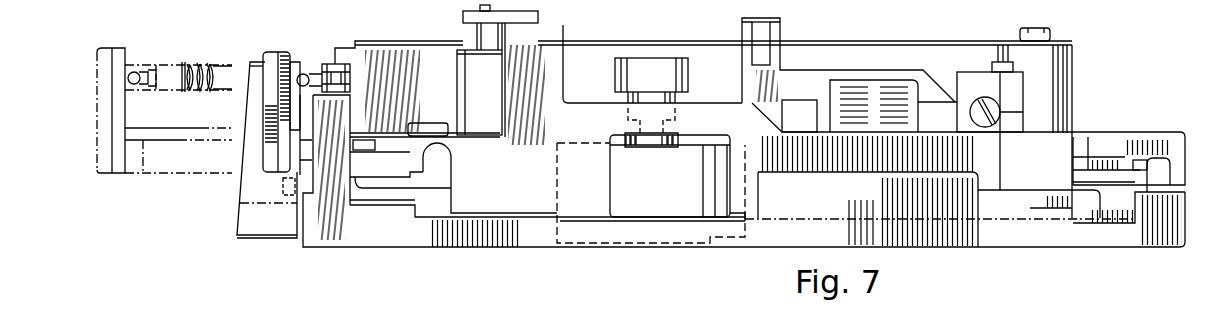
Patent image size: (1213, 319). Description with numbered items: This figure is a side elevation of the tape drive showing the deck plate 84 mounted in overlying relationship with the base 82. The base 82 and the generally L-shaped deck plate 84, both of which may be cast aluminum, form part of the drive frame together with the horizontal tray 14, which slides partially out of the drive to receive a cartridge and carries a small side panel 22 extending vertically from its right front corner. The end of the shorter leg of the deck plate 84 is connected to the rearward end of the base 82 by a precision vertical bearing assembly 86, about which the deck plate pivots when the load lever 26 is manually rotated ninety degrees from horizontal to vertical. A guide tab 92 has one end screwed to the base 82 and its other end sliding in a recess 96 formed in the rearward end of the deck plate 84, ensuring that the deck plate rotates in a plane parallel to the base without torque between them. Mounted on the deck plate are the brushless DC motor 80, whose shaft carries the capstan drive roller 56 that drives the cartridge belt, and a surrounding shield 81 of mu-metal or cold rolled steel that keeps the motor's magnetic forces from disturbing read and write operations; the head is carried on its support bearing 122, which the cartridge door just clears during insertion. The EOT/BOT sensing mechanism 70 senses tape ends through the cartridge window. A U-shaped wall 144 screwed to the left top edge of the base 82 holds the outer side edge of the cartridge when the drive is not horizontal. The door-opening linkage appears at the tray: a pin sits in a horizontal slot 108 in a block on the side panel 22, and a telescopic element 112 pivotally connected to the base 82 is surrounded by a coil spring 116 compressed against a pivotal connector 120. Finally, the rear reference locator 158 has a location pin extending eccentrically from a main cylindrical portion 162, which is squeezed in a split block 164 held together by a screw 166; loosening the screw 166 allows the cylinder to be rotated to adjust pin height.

The horizontal tray 14 is at (188, 128).
The side panel 22 is at (97, 97).
The load lever 26 is at (245, 185).
The capstan drive roller 56 is at (670, 67).
The EOT/BOT sensing mechanism 70 is at (780, 32).
The brushless DC motor 80 is at (692, 142).
The shield 81 is at (660, 212).
The base 82 is at (1097, 237).
The deck plate 84 is at (1125, 142).
The precision vertical bearing assembly 86 is at (1063, 42).
The guide tab 92 is at (1140, 160).
The recess 96 is at (1089, 170).
The horizontal slot 108 is at (135, 55).
The telescopic element 112 is at (216, 66).
The coil spring 116 is at (197, 60).
The pivotal connector 120 is at (350, 75).
The support bearing 122 is at (470, 68).
The U-shaped wall 144 is at (593, 52).
The reference locator 158 is at (957, 70).
The main cylindrical portion 162 is at (978, 124).
The split block 164 is at (1017, 100).
The screw 166 is at (1000, 60).